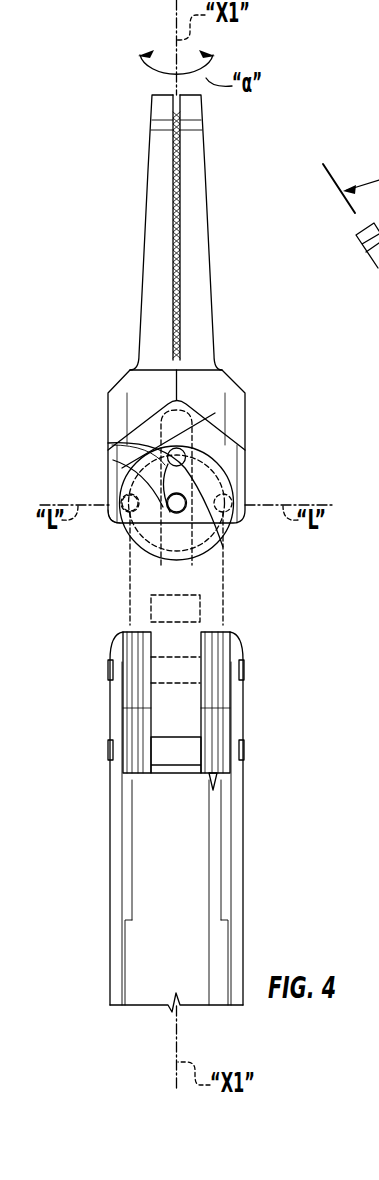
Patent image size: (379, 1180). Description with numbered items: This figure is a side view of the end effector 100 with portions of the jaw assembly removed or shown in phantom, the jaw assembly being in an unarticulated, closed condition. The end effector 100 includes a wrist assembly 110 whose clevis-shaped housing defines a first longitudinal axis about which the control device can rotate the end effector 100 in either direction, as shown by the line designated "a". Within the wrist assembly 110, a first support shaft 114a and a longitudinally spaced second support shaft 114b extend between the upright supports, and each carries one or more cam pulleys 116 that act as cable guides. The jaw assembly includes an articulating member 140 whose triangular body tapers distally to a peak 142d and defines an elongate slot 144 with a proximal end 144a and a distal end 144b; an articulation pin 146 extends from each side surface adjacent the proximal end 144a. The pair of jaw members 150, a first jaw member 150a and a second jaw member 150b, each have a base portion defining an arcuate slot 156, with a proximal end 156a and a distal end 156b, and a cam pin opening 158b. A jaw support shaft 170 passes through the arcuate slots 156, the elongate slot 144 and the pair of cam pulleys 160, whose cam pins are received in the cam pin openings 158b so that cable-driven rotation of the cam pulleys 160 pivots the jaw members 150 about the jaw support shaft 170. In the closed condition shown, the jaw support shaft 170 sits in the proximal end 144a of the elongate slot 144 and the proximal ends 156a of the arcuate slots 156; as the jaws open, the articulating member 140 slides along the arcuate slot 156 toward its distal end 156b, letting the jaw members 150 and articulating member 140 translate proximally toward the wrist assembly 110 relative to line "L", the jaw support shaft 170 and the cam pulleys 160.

The end effector 100 is at (279, 589).
The wrist assembly 110 is at (250, 877).
The first support shaft 114a is at (245, 747).
The second support shaft 114b is at (245, 670).
The cam pulley 116 is at (133, 690).
The articulating member 140 is at (222, 447).
The peak 142d is at (176, 412).
The elongate slot 144 is at (202, 447).
The proximal end of elongate slot 144a is at (228, 490).
The distal end of elongate slot 144b is at (135, 418).
The articulation pin 146 is at (110, 514).
The pair of jaw members 150 is at (85, 210).
The first jaw member 150a is at (204, 172).
The second jaw member 150b is at (148, 172).
The arcuate slot 156 is at (126, 436).
The proximal end of arcuate slot 156a is at (176, 513).
The distal end of arcuate slot 156b is at (124, 450).
The cam pin opening 158b is at (197, 422).
The pair of cam pulleys 160 is at (118, 460).
The jaw support shaft 170 is at (183, 508).